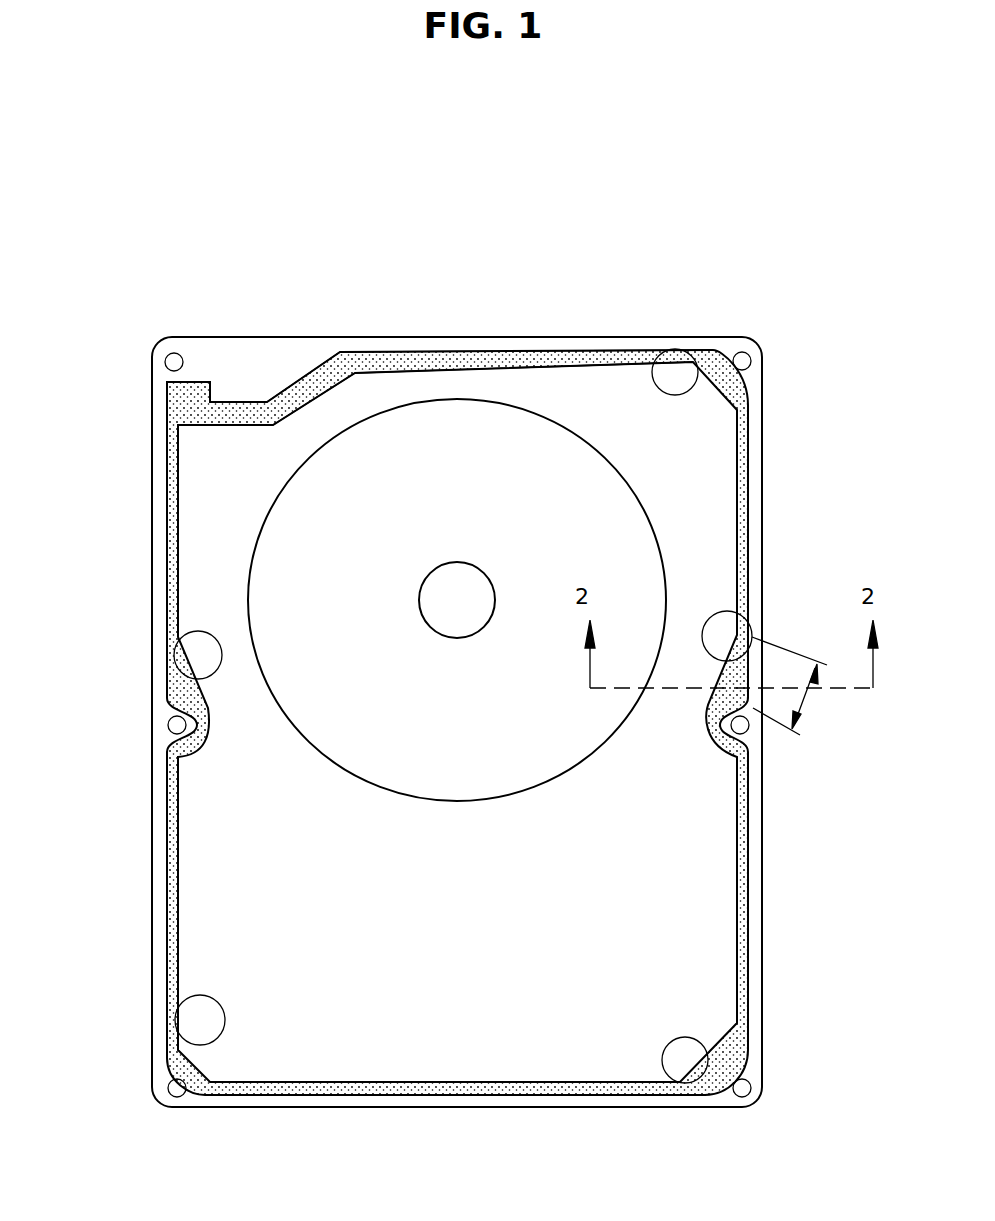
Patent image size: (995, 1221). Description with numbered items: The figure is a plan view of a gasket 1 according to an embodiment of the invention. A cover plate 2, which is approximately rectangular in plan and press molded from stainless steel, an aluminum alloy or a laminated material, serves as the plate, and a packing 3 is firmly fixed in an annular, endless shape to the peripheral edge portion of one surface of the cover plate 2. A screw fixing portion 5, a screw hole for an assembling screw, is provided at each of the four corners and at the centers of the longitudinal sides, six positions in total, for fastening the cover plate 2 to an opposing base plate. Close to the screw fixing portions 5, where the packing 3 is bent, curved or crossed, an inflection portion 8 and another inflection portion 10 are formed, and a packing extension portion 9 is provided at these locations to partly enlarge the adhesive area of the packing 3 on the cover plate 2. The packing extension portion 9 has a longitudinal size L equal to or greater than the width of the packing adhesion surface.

The gasket 1 is at (486, 330).
The cover plate 2 is at (697, 489).
The packing 3 is at (745, 507).
The screw fixing portion 5 is at (174, 362).
The inflection portion 8 is at (662, 350).
The packing extension portion 9 is at (295, 378).
The inflection portion 10 is at (345, 360).
The size in longitudinal direction L is at (808, 708).